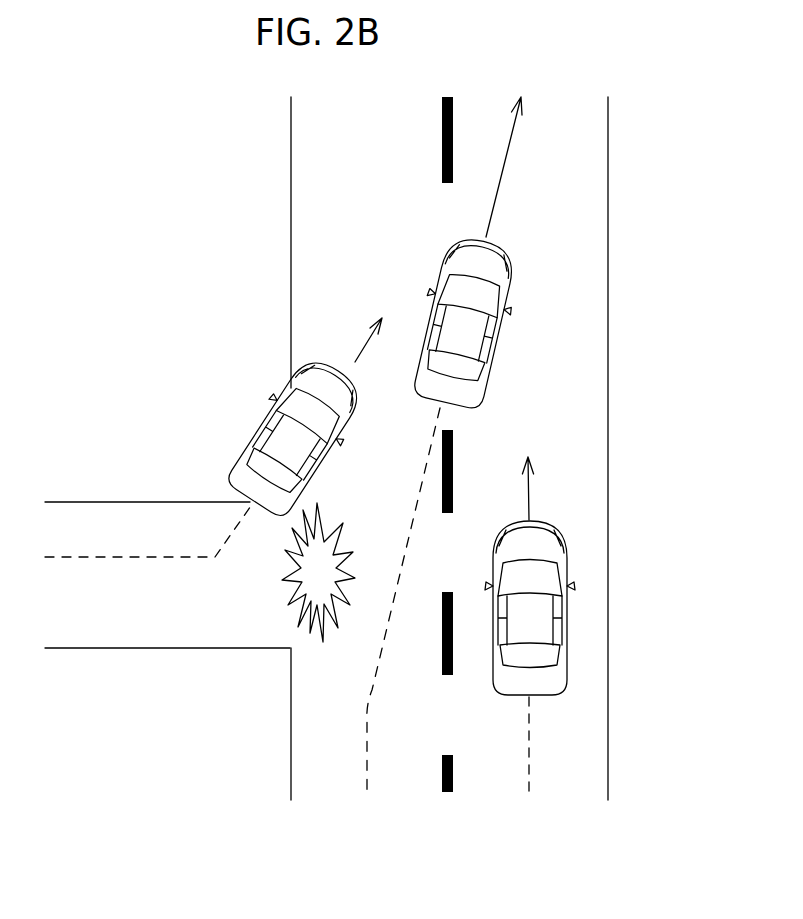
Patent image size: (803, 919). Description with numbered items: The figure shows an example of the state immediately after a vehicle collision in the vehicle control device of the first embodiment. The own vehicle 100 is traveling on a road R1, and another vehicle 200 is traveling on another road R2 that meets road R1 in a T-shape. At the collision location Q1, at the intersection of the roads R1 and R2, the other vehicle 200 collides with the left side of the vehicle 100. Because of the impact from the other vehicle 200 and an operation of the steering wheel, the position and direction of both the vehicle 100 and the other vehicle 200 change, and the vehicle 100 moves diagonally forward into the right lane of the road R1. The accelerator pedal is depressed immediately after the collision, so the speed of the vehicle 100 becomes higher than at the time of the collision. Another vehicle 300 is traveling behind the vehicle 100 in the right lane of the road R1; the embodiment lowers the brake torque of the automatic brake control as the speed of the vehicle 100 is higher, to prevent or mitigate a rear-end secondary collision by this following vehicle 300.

The road R1 is at (321, 173).
The another road R2 is at (86, 517).
The vehicle 100 is at (465, 332).
The other vehicle 200 is at (292, 438).
The another vehicle 300 is at (532, 615).
The collision location Q1 is at (315, 578).